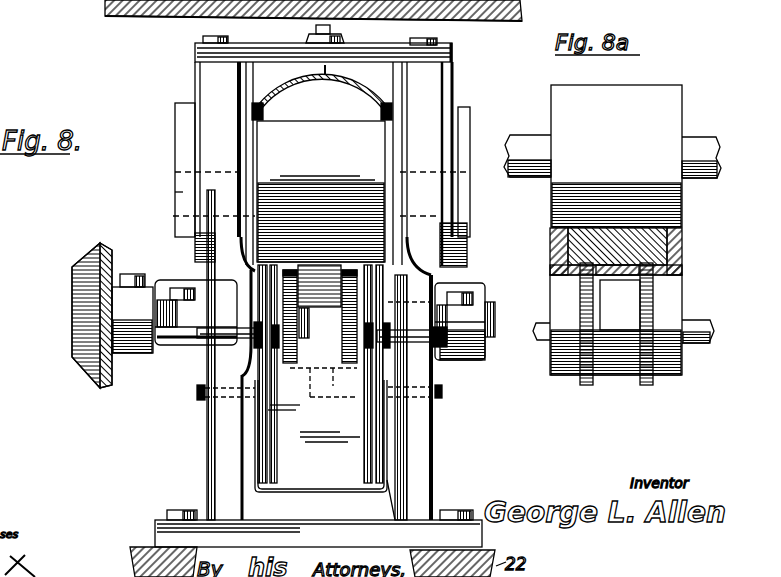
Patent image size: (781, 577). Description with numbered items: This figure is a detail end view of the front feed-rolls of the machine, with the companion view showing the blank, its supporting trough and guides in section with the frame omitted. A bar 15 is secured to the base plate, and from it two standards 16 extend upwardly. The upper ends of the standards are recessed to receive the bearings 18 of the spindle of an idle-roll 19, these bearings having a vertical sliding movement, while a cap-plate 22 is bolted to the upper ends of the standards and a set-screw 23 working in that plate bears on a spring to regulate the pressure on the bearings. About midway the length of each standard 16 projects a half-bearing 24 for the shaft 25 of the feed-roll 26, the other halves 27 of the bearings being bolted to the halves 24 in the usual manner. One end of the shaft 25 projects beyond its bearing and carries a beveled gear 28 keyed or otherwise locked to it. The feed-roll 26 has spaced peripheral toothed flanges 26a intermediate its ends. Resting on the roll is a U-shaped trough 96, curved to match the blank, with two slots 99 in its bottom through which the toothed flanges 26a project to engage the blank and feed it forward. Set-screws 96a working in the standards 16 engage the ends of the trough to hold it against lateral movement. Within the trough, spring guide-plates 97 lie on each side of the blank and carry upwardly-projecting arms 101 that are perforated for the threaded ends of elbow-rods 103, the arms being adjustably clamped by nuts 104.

In FIG. 8, the bar 15 is at (338, 528).
In FIG. 8, the standards 16 is at (222, 392).
In FIG. 8, the bearings 18 is at (178, 156).
In FIG. 8, the idle-roll 19 is at (321, 191).
In FIG. 8A, the idle-roll 19 is at (612, 156).
In FIG. 8, the cap-plate 22 is at (441, 61).
In FIG. 8, the set-screw 23 is at (312, 31).
In FIG. 8, the half-bearing 24 is at (163, 344).
In FIG. 8, the shaft 25 is at (497, 314).
In FIG. 8A, the shaft 25 is at (549, 334).
In FIG. 8, the feed-roll 26 is at (336, 404).
In FIG. 8A, the feed-roll 26 is at (665, 296).
In FIG. 8, the toothed flanges 26a is at (350, 328).
In FIG. 8A, the toothed flanges 26a is at (581, 383).
In FIG. 8, the other halves of the bearings 27 is at (178, 287).
In FIG. 8, the beveled gear 28 is at (106, 254).
In FIG. 8, the U-shaped trough 96 is at (386, 486).
In FIG. 8A, the U-shaped trough 96 is at (682, 274).
In FIG. 8, the set-screws 96a is at (480, 392).
In FIG. 8, the spring guide-plates 97 is at (367, 471).
In FIG. 8A, the spring guide-plates 97 is at (556, 241).
In FIG. 8, the slots 99 is at (341, 343).
In FIG. 8A, the slots 99 is at (635, 273).
In FIG. 8, the arms 101 is at (313, 378).
In FIG. 8, the elbow-rods 103 is at (210, 346).
In FIG. 8, the nuts 104 is at (248, 347).